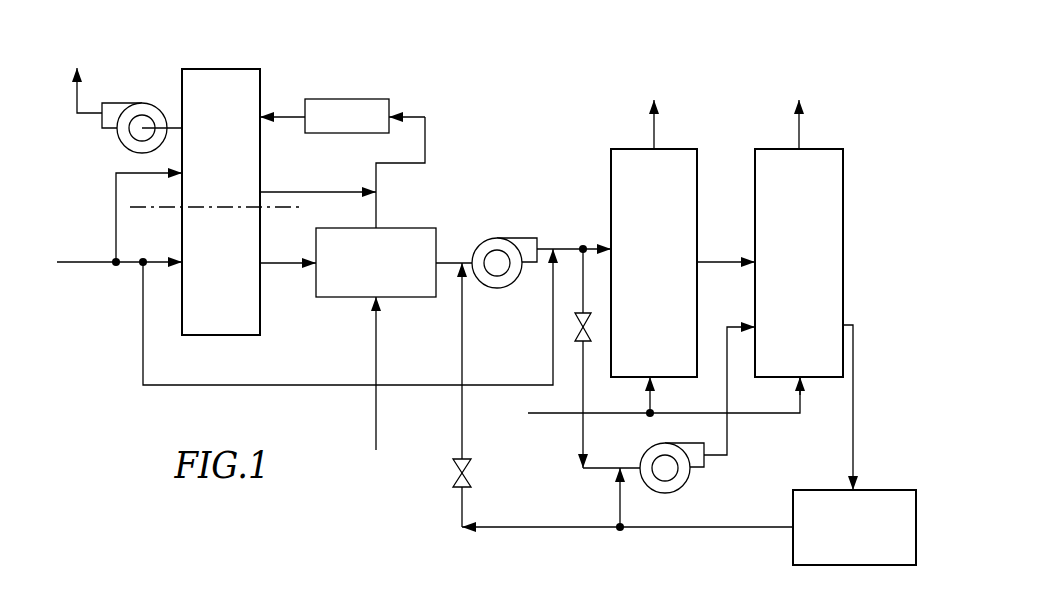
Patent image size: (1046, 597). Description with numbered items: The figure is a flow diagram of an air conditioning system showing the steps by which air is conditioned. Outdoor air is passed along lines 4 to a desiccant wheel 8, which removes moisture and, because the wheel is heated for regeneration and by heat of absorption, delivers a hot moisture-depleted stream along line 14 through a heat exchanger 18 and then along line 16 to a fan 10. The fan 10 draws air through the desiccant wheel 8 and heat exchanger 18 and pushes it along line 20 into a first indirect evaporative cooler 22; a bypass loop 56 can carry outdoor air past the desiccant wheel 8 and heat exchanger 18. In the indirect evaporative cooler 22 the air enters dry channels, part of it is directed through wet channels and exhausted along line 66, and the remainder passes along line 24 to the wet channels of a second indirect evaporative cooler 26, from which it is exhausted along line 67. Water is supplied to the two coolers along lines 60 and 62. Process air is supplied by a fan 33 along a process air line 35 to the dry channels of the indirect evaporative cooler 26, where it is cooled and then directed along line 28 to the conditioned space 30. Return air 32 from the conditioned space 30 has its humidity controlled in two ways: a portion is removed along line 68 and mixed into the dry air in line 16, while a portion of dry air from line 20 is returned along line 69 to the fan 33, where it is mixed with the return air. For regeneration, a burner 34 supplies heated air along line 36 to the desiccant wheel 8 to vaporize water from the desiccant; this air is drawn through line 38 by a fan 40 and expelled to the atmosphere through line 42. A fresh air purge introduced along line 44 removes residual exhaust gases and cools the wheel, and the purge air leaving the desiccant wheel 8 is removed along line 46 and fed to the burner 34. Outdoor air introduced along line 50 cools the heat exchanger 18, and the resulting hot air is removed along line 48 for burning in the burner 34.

The lines 4 is at (84, 262).
The desiccant wheel 8 is at (218, 336).
The fan 10 is at (500, 288).
The line 14 is at (283, 265).
The line 16 is at (448, 260).
The heat exchanger 18 is at (353, 298).
The line 20 is at (568, 248).
The indirect evaporative cooler 22 is at (609, 157).
The line 24 is at (714, 260).
The indirect evaporative cooler 26 is at (843, 137).
The line 28 is at (855, 343).
The conditioned space 30 is at (792, 548).
The return air 32 is at (668, 530).
The fan 33 is at (688, 484).
The burner 34 is at (340, 99).
The process air line 35 is at (728, 432).
The line 36 is at (292, 117).
The line 38 is at (181, 126).
The fan 40 is at (122, 140).
The line 42 is at (76, 95).
The line 44 is at (116, 180).
The line 46 is at (294, 191).
The line 48 is at (378, 206).
The line 50 is at (376, 396).
The bypass loop 56 is at (287, 386).
The line 60 is at (648, 408).
The line 62 is at (804, 395).
The line 66 is at (653, 128).
The line 67 is at (798, 128).
The line 68 is at (466, 490).
The line 69 is at (592, 470).